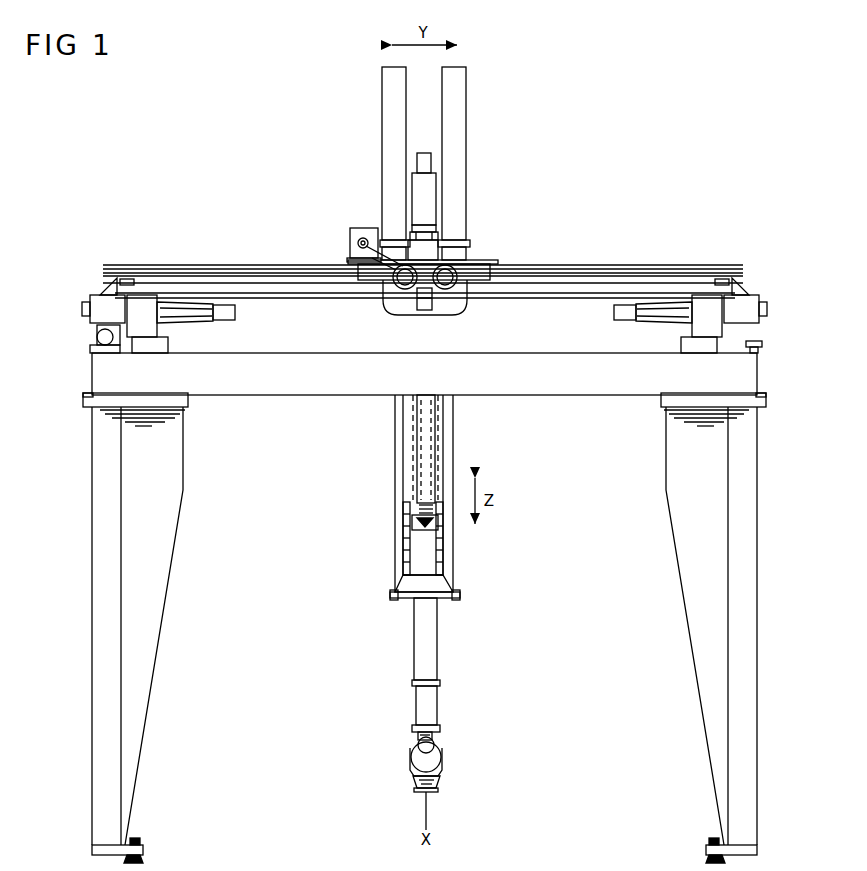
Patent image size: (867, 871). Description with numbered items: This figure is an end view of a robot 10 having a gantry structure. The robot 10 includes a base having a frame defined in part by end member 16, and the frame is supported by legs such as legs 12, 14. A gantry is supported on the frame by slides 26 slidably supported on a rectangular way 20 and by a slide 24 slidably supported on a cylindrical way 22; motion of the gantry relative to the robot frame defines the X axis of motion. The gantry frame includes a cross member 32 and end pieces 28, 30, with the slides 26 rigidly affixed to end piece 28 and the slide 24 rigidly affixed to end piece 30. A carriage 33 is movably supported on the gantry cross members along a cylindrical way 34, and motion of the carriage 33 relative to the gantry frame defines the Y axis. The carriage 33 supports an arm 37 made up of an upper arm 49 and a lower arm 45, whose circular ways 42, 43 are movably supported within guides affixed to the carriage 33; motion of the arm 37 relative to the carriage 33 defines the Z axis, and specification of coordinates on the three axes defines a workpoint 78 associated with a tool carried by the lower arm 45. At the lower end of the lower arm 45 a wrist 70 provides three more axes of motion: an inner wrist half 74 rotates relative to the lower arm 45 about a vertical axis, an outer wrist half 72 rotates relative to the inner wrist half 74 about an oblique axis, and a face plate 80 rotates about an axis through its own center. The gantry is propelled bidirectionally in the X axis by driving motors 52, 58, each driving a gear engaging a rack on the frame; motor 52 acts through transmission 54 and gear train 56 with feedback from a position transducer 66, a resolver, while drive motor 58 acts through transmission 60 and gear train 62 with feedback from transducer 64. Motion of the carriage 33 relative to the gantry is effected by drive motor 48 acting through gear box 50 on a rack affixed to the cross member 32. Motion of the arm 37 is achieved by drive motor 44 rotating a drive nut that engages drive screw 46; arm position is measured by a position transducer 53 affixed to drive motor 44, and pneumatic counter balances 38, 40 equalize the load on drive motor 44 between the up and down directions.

The robot 10 is at (558, 150).
The leg 12 is at (757, 550).
The leg 14 is at (172, 567).
The end member 16 is at (555, 395).
The rectangular way 20 is at (762, 343).
The cylindrical way 22 is at (90, 348).
The slide 24 is at (95, 337).
The slides 26 is at (760, 353).
The end piece 28 is at (755, 295).
The end piece 30 is at (90, 300).
The cross member 32 is at (103, 280).
The carriage 33 is at (480, 260).
The cylindrical way 34 is at (160, 265).
The arm 37 is at (370, 622).
The pneumatic counter balance 38 is at (466, 123).
The pneumatic counter balance 40 is at (382, 128).
The circular way 42 is at (395, 462).
The circular way 43 is at (453, 437).
The drive motor 44 is at (437, 195).
The lower arm 45 is at (437, 644).
The drive screw 46 is at (418, 446).
The drive motor 48 is at (362, 228).
The upper arm 49 is at (450, 598).
The gear box 50 is at (390, 312).
The driving motor 52 is at (200, 322).
The position transducer 53 is at (432, 153).
The transmission 54 is at (157, 322).
The gear train 56 is at (168, 346).
The drive motor 58 is at (645, 322).
The transmission 60 is at (694, 325).
The gear train 62 is at (681, 346).
The transducer 64 is at (614, 312).
The position transducer 66 is at (235, 312).
The wrist 70 is at (459, 731).
The outer wrist half 72 is at (443, 777).
The inner wrist half 74 is at (412, 752).
The workpoint 78 is at (432, 838).
The face plate 80 is at (432, 793).